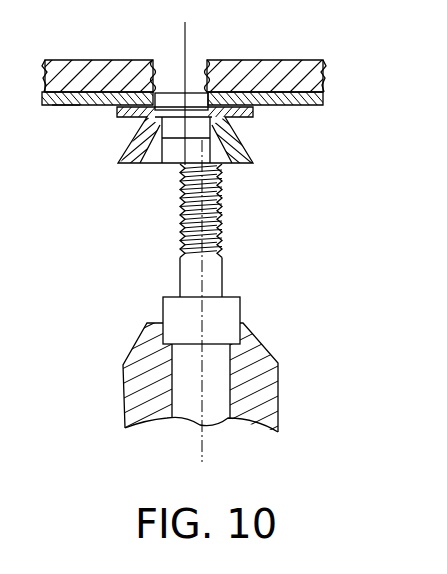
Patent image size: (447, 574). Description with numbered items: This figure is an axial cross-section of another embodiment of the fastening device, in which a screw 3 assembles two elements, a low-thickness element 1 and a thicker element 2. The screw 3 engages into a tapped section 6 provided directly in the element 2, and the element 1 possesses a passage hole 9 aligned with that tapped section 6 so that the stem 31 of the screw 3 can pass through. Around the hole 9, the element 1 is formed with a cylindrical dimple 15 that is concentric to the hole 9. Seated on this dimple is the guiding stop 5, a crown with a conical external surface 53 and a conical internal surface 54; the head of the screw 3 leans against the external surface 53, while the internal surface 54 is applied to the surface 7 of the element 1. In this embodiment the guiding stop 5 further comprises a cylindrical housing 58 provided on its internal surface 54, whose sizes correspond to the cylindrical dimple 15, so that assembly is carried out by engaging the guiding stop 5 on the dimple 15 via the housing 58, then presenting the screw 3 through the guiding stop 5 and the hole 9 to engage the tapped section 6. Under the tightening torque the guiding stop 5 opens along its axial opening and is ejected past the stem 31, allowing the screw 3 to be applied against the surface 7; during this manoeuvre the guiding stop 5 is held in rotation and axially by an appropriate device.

The element to be assembled 1 is at (300, 106).
The element 2 is at (85, 78).
The screw 3 is at (180, 235).
The guiding stop 5 is at (193, 157).
The tapped section 6 is at (168, 62).
The surface 7 is at (65, 106).
The passage hole 9 is at (191, 94).
The cylindrical dimple 15 is at (131, 126).
The stem 31 is at (210, 281).
The external surface 53 is at (221, 166).
The internal surface 54 is at (237, 92).
The cylindrical housing 58 is at (158, 168).